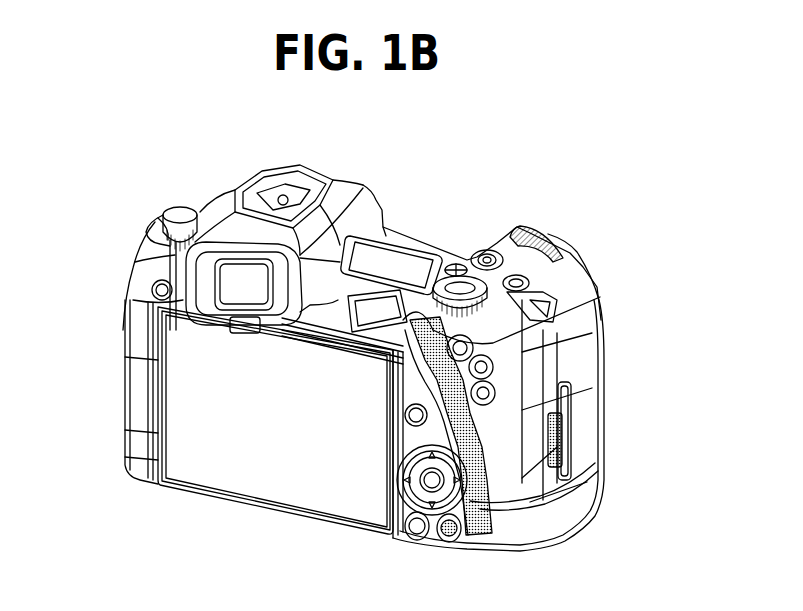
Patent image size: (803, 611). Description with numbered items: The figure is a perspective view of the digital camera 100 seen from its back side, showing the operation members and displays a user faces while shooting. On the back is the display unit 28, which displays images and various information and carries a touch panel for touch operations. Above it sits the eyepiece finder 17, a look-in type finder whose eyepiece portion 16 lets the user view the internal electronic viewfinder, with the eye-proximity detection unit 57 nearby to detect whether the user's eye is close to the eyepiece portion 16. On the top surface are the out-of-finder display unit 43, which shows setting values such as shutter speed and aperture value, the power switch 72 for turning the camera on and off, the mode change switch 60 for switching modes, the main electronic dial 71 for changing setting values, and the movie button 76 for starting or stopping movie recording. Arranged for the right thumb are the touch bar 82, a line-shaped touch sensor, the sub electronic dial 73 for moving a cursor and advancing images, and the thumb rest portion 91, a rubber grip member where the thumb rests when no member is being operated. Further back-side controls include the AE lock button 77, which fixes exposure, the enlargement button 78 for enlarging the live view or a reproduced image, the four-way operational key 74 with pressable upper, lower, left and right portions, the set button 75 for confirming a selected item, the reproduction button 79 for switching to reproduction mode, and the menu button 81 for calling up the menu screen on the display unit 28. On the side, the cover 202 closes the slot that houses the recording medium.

The digital camera 100 is at (565, 141).
The power switch 72 is at (188, 226).
The eyepiece portion 16 is at (234, 274).
The eyepiece finder 17 is at (284, 254).
The eye-proximity detection unit 57 is at (245, 322).
The menu button 81 is at (162, 290).
The out-of-finder display unit 43 is at (373, 318).
The touch bar 82 is at (390, 255).
The mode change switch 60 is at (460, 285).
The movie button 76 is at (488, 250).
The main electronic dial 71 is at (548, 236).
The sub electronic dial 73 is at (530, 278).
The thumb rest portion 91 is at (557, 310).
The AE lock button 77 is at (492, 362).
The enlargement button 78 is at (571, 400).
The cover 202 is at (548, 448).
The display unit 28 is at (225, 477).
The set button 75 is at (432, 481).
The reproduction button 79 is at (417, 530).
The four-way operational key 74 is at (476, 530).